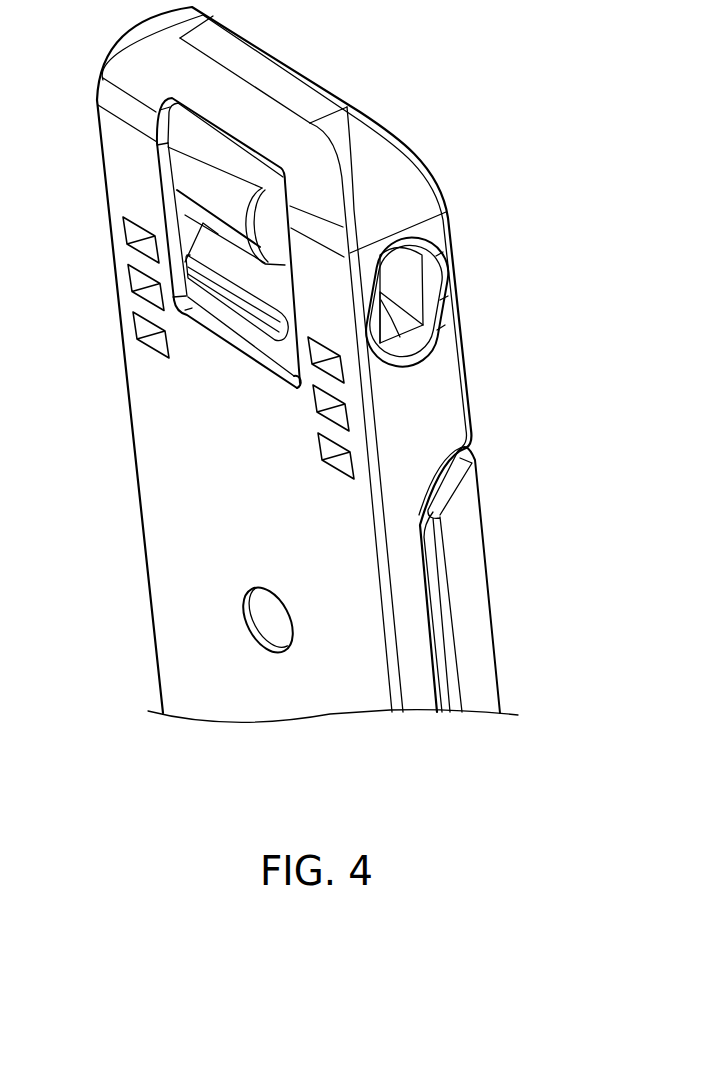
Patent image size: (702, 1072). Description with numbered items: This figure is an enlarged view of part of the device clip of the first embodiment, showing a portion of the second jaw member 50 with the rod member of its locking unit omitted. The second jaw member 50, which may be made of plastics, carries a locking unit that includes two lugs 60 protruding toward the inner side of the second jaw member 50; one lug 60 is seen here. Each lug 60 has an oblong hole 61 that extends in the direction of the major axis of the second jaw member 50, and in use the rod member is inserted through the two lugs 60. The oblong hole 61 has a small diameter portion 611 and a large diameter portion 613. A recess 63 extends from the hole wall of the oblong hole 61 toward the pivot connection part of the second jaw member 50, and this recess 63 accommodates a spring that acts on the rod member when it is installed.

The second jaw member 50 is at (123, 492).
The lug 60 is at (430, 405).
The oblong hole 61 is at (563, 233).
The small diameter portion 611 is at (410, 282).
The large diameter portion 613 is at (441, 294).
The recess 63 is at (386, 317).